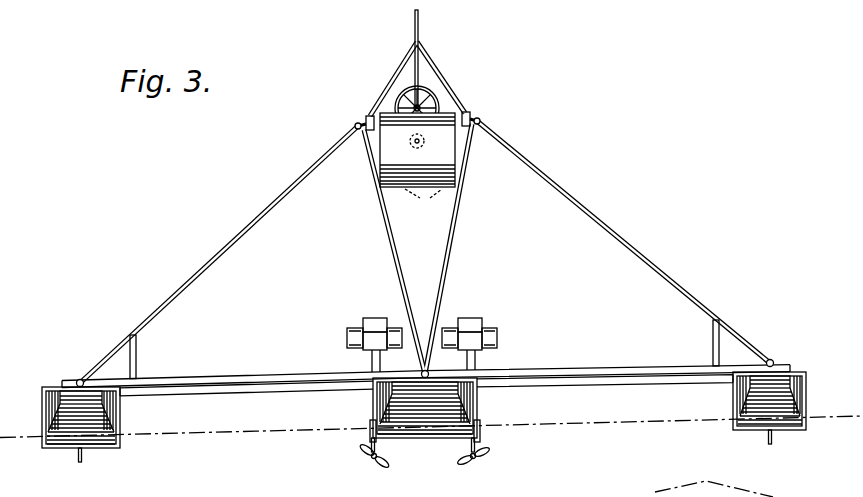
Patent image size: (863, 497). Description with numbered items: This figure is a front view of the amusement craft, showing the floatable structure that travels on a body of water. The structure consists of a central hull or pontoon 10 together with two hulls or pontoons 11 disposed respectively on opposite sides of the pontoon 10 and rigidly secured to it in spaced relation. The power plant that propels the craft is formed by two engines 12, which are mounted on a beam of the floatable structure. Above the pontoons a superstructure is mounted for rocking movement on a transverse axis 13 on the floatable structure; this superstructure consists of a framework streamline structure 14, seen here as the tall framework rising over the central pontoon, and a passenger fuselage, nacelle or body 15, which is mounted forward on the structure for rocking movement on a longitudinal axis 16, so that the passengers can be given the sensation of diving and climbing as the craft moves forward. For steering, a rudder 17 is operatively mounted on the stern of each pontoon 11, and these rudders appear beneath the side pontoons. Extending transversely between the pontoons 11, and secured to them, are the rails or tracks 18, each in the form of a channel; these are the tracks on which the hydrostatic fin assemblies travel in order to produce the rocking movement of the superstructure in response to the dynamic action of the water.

The central hull or pontoon 10 is at (410, 439).
The hulls or pontoons 11 is at (42, 417).
The engines 12 is at (347, 333).
The transverse axis 13 is at (357, 123).
The framework streamline structure 14 is at (440, 80).
The passenger fuselage, nacelle or body 15 is at (448, 190).
The longitudinal axis 16 is at (411, 143).
The rudder 17 is at (83, 458).
The rails or tracks 18 is at (259, 393).